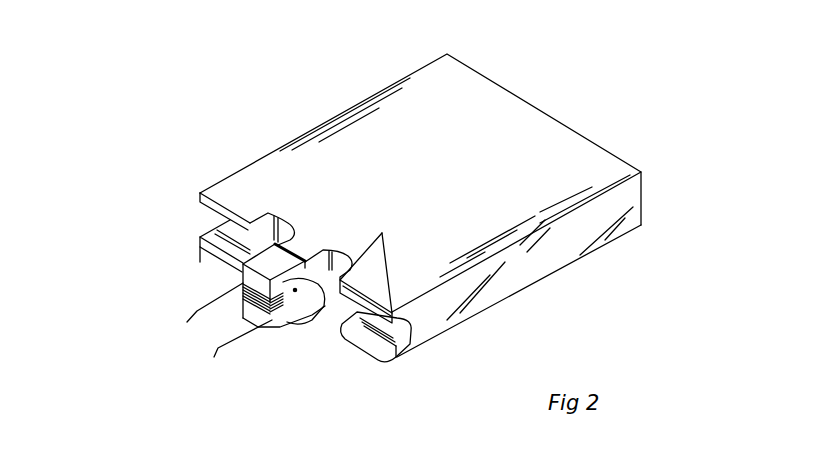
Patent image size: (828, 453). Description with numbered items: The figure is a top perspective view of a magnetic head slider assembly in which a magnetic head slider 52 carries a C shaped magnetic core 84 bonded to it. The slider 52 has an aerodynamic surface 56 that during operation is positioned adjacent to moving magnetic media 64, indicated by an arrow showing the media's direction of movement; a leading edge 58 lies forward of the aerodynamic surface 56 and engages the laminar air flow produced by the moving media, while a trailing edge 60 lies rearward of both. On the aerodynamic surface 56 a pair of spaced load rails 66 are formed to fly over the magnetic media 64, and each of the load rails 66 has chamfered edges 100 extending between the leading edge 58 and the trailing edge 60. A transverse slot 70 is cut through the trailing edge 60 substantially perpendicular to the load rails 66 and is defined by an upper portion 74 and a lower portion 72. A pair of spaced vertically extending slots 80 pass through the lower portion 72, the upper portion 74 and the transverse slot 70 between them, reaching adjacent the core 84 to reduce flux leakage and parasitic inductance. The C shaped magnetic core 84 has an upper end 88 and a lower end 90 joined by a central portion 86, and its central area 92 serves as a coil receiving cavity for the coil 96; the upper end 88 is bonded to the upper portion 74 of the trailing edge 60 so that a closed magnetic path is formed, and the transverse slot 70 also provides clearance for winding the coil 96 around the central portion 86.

The magnetic head slider 52 is at (434, 58).
The aerodynamic surface 56 is at (609, 243).
The leading edge 58 is at (613, 153).
The trailing edge 60 is at (333, 337).
The magnetic media 64 is at (576, 97).
The load rails 66 is at (203, 268).
The transverse slot 70 is at (398, 360).
The lower portion 72 is at (200, 249).
The upper portion 74 is at (207, 205).
The vertically extending slots 80 is at (504, 62).
The C shaped magnetic core 84 is at (233, 282).
The central portion 86 is at (250, 290).
The upper end 88 is at (305, 164).
The lower end 90 is at (277, 322).
The central area 92 is at (295, 290).
The coil 96 is at (187, 322).
The chamfered edges 100 is at (524, 291).